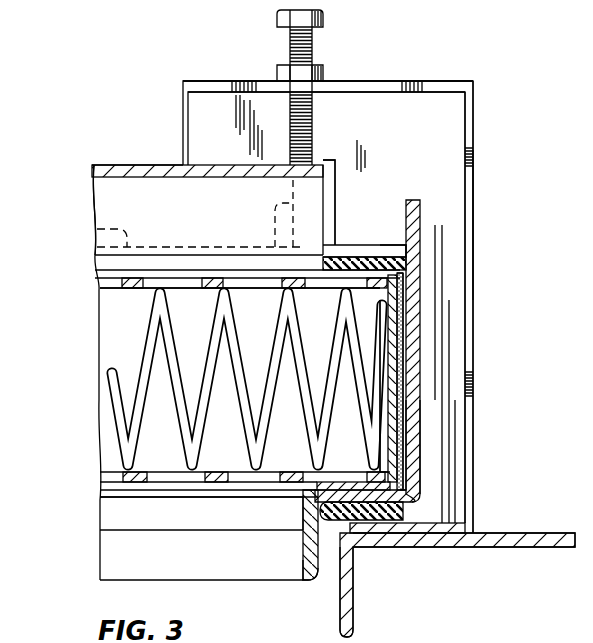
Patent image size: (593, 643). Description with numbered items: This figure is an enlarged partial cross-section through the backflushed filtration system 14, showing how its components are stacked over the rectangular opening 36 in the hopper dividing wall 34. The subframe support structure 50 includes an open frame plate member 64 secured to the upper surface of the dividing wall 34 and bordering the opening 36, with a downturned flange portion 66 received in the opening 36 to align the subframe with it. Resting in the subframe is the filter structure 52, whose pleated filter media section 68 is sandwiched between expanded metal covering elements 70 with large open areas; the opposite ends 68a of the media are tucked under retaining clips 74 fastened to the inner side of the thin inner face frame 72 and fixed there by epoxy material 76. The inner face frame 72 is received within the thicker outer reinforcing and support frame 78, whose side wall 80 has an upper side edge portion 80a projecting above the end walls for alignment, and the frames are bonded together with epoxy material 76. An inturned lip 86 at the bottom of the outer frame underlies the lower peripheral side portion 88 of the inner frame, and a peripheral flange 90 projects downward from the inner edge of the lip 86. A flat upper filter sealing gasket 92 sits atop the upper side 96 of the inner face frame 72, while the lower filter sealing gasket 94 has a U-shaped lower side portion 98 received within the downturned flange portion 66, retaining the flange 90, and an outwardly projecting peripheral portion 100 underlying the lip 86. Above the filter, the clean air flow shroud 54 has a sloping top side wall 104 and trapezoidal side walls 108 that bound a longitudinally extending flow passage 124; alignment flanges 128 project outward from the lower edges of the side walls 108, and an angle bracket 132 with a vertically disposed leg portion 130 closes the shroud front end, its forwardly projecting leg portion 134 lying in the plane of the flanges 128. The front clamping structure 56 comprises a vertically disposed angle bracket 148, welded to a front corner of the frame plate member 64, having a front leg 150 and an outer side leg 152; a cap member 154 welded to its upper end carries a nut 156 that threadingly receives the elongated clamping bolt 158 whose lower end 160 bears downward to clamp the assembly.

The backflushed filtration system 14 is at (173, 52).
The hopper dividing wall 34 is at (512, 548).
The rectangular opening 36 is at (350, 553).
The subframe support structure 50 is at (486, 527).
The filter structure 52 is at (438, 327).
The clean air flow shroud 54 is at (113, 153).
The front clamping structure 56 is at (490, 107).
The open frame plate member 64 is at (445, 524).
The downturned flange portion 66 is at (355, 602).
The pleated filter media section 68 is at (142, 343).
The opposite ends of pleated filter media section 68a is at (420, 421).
The expanded metal covering element 70 is at (213, 282).
The inner face frame 72 is at (420, 383).
The retaining clip 74 is at (420, 300).
The epoxy material 76 is at (425, 320).
The outer reinforcing and support frame 78 is at (430, 353).
The side wall of outer frame 80 is at (420, 450).
The upper side edge portion of side wall 80a is at (420, 222).
The inturned lip 86 is at (400, 516).
The lower peripheral side portion of inner frame 88 is at (343, 487).
The peripheral flange 90 is at (317, 515).
The upper filter sealing gasket 92 is at (343, 252).
The lower filter sealing gasket 94 is at (295, 549).
The upper side of inner face frame 96 is at (338, 276).
The lower side portion of lower gasket 98 is at (303, 570).
The outwardly projecting peripheral portion 100 is at (383, 520).
The top side wall 104 is at (150, 165).
The side wall of shroud 108 is at (337, 194).
The flow passage 124 is at (207, 187).
The alignment flange 128 is at (392, 244).
The vertically disposed leg portion 130 is at (152, 214).
The angle bracket 132 is at (88, 206).
The forwardly projecting leg portion 134 is at (97, 236).
The vertically disposed angle bracket 148 is at (495, 228).
The front leg 150 is at (353, 129).
The outer side leg 152 is at (476, 162).
The cap member 154 is at (388, 85).
The nut 156 is at (318, 66).
The clamping bolt 158 is at (290, 40).
The lower end of clamping bolt 160 is at (276, 212).